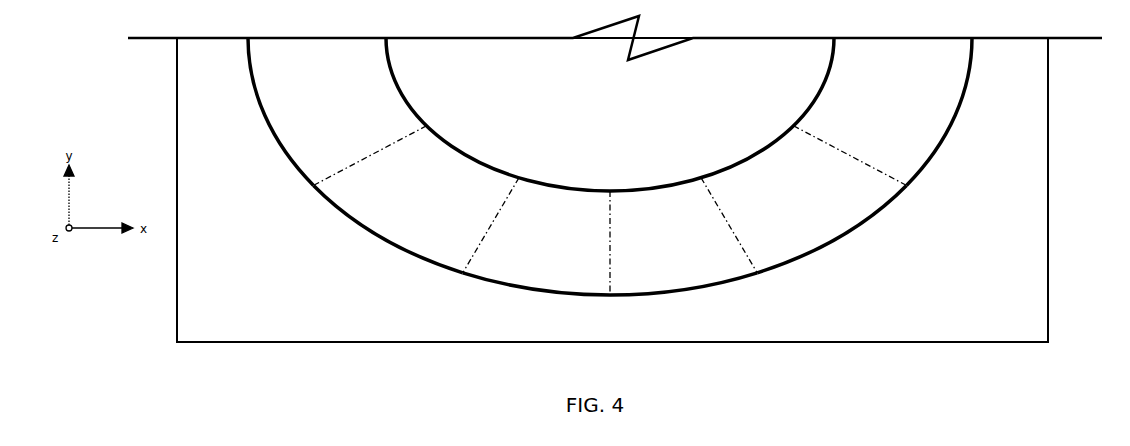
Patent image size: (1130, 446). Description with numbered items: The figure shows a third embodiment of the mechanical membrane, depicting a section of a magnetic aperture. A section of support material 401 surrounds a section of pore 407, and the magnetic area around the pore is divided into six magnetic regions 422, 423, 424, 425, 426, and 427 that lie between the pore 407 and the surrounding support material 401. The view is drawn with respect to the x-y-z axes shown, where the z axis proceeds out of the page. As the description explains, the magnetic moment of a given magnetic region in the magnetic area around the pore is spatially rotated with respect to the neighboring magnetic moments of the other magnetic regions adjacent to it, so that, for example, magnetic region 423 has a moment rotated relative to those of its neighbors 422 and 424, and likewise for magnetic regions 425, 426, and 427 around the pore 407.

The support material 401 is at (227, 280).
The pore 407 is at (610, 114).
The magnetic region 422 is at (296, 111).
The magnetic region 423 is at (388, 199).
The magnetic region 424 is at (536, 236).
The magnetic region 425 is at (683, 243).
The magnetic region 426 is at (803, 225).
The magnetic region 427 is at (883, 111).